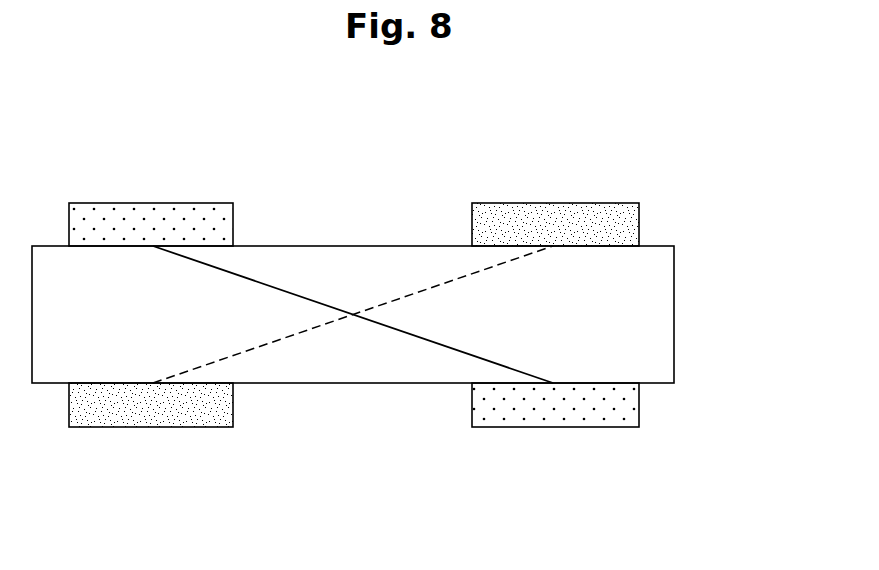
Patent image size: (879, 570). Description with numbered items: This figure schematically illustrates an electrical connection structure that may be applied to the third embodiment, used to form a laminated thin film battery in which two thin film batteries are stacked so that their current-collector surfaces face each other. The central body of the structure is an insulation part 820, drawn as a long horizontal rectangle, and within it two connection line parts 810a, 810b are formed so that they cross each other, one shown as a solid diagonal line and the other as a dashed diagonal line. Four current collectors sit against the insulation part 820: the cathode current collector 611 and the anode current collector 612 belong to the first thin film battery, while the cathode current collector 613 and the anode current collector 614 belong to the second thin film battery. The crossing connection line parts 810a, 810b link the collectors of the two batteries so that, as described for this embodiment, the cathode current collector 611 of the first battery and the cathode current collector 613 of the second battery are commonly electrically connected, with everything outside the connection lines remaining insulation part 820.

The insulation part 820 is at (674, 314).
The connection line part 810a is at (295, 292).
The connection line part 810b is at (310, 329).
The cathode current collector 611 is at (553, 203).
The anode current collector 612 is at (152, 203).
The cathode current collector 613 is at (151, 427).
The anode current collector 614 is at (570, 427).